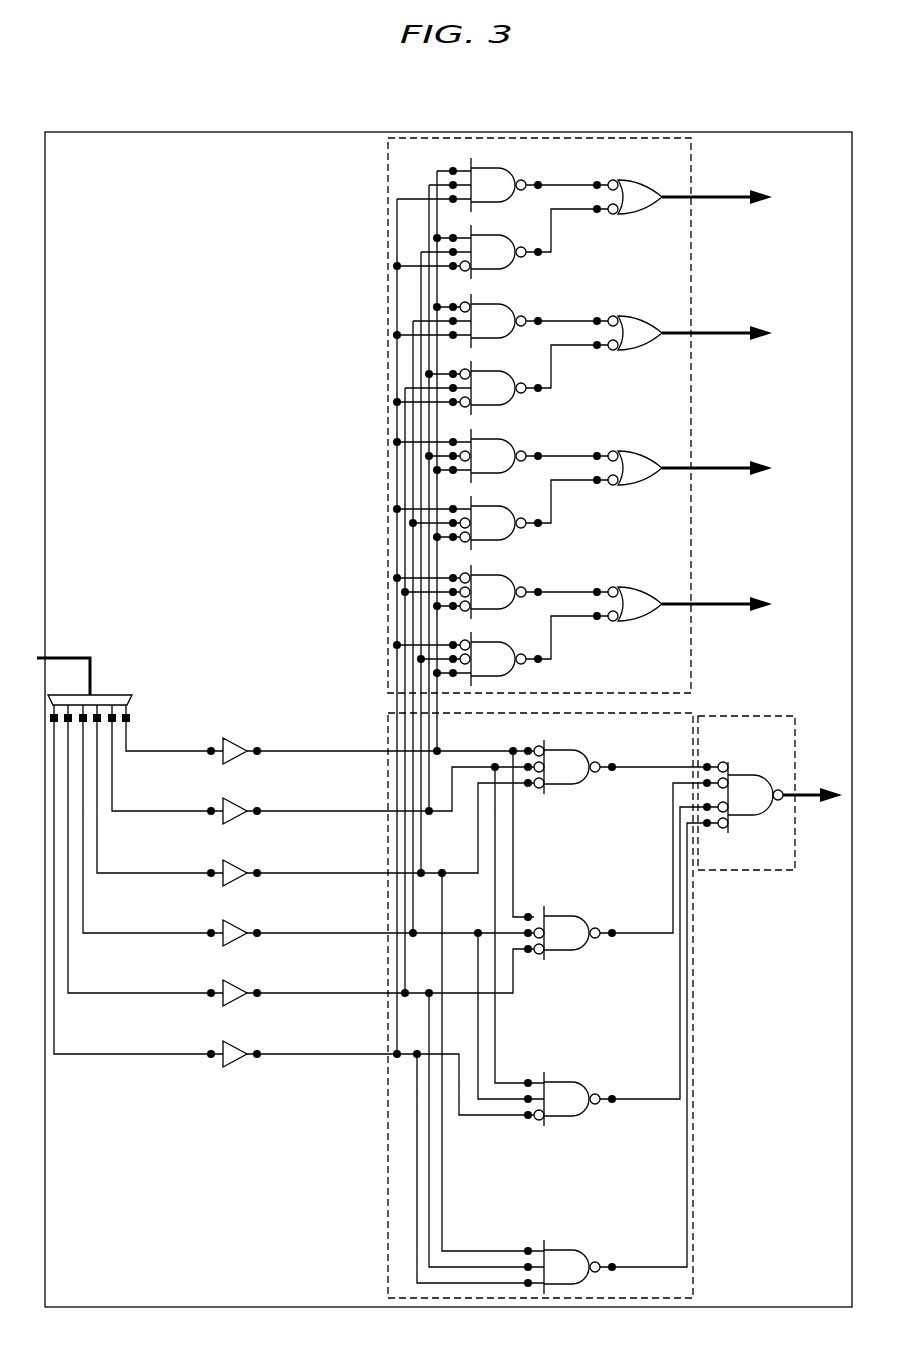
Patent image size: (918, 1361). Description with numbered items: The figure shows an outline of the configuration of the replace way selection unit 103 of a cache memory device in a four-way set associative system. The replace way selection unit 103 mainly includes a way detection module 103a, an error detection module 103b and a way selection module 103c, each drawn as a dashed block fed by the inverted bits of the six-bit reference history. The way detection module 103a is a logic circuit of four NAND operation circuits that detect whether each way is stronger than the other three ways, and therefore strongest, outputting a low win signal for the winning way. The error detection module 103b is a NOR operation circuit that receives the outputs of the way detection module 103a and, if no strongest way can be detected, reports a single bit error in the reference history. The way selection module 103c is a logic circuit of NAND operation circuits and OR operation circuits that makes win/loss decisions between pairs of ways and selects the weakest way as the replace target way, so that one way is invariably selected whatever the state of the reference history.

The replace way selection unit 103 is at (770, 132).
The way detection module 103a is at (700, 992).
The error detection module 103b is at (770, 716).
The way selection module 103c is at (388, 152).